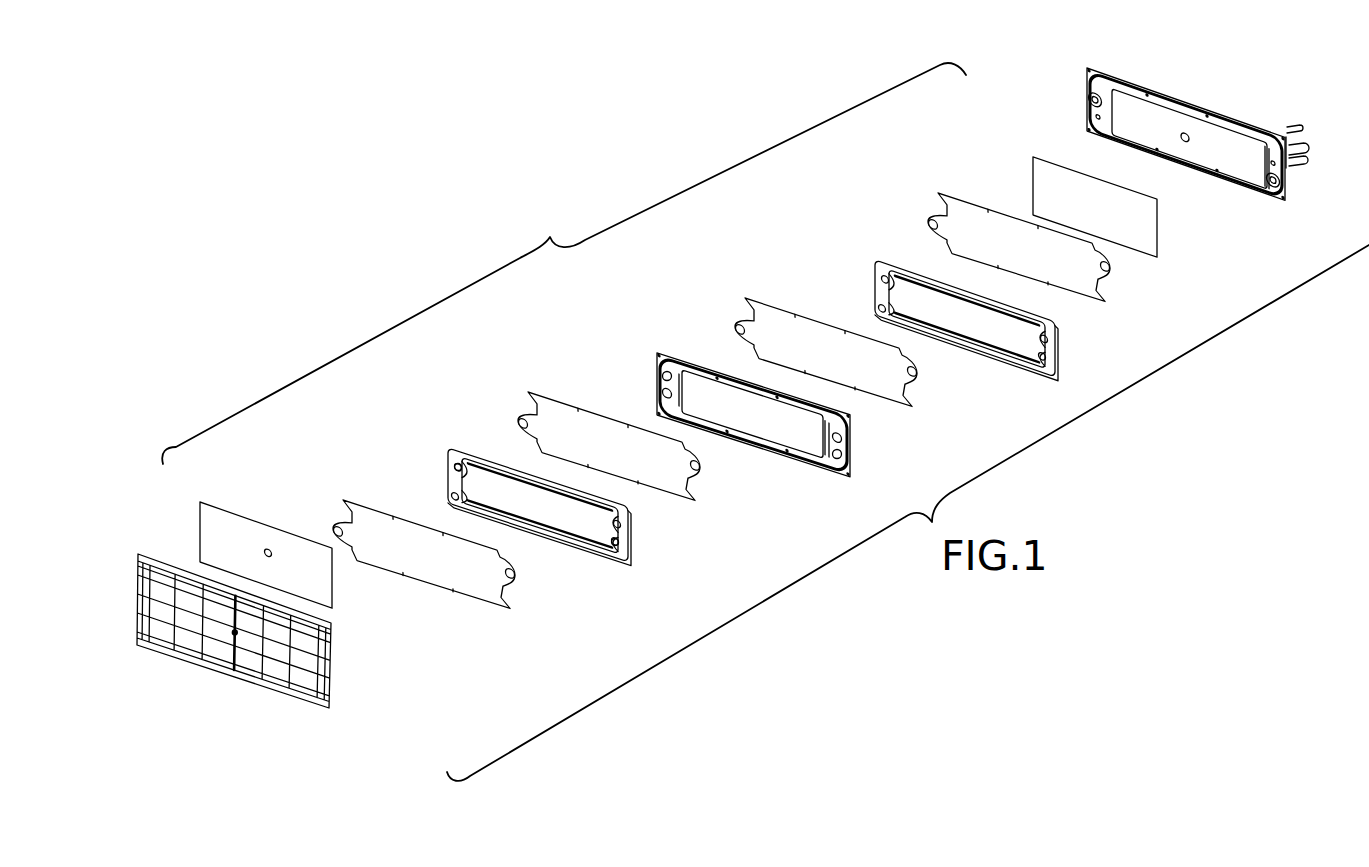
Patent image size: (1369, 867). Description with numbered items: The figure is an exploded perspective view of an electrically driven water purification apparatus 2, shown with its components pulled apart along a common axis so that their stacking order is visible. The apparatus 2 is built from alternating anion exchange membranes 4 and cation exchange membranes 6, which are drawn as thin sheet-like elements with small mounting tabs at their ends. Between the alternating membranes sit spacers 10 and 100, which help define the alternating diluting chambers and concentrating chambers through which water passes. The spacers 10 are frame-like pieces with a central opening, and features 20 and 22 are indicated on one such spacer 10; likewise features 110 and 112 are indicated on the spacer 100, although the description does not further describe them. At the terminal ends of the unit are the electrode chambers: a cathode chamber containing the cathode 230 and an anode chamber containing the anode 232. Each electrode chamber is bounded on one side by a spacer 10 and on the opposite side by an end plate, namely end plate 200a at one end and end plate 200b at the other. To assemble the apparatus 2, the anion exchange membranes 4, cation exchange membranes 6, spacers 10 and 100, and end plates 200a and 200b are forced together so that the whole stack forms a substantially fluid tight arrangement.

The electrically driven water purification apparatus 2 is at (765, 422).
The anion exchange membrane 4 is at (750, 308).
The cation exchange membrane 6 is at (343, 500).
The spacer 10 is at (450, 474).
The mounting hole 20 is at (623, 542).
The mounting hole 22 is at (452, 462).
The spacer 100 is at (660, 357).
The mounting hole 110 is at (843, 456).
The mounting hole 112 is at (663, 375).
The end plate 200a is at (333, 692).
The end plate 200b is at (1160, 90).
The cathode 230 is at (337, 588).
The anode 232 is at (1157, 233).